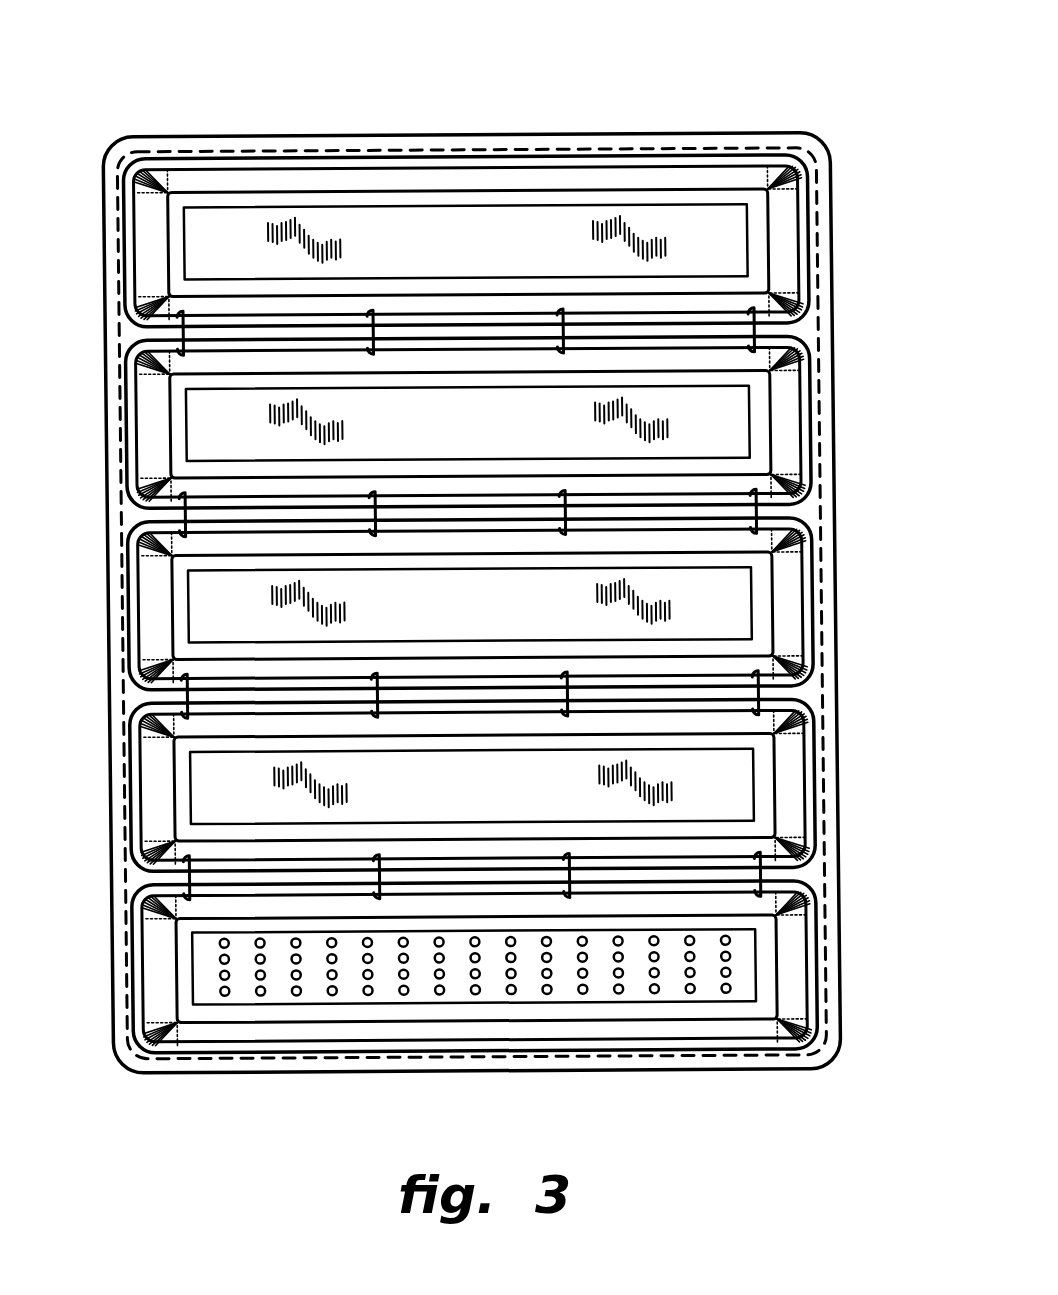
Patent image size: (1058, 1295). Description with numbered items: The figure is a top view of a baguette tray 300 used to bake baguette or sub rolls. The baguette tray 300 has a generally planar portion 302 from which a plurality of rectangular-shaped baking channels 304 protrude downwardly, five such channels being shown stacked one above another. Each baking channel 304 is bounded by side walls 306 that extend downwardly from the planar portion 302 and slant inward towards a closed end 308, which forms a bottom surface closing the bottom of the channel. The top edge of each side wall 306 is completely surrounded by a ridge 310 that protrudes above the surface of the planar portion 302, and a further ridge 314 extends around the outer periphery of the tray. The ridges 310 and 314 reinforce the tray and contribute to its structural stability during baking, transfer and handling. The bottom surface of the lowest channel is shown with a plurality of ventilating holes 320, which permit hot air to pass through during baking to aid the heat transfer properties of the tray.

The baguette tray 300 is at (471, 582).
The planar portion 302 is at (133, 878).
The baking channels 304 is at (522, 585).
The side walls 306 is at (783, 245).
The closed end 308 is at (492, 437).
The ridge 310 is at (475, 1020).
The ridge 314 is at (168, 152).
The ventilating holes 320 is at (367, 962).